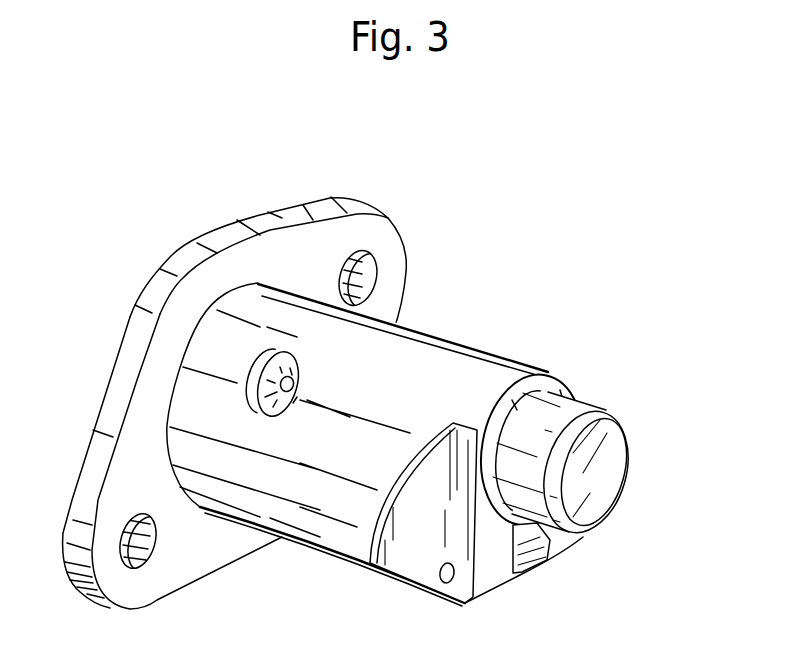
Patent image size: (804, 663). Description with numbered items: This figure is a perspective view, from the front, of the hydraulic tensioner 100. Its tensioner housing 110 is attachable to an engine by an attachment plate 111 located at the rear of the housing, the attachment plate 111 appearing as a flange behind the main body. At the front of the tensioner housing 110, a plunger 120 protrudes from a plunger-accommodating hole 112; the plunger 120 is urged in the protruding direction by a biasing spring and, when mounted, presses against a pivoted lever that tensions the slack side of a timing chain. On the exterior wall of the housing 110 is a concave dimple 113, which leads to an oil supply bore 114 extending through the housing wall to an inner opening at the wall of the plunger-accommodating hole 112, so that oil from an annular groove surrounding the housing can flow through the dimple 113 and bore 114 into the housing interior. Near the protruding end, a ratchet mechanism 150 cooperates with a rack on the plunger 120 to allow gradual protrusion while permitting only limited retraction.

The hydraulic tensioner 100 is at (160, 240).
The tensioner housing 110 is at (757, 307).
The attachment plate 111 is at (390, 246).
The plunger-accommodating hole 112 is at (585, 385).
The concave dimple 113 is at (286, 360).
The oil supply bore 114 is at (294, 388).
The plunger 120 is at (590, 393).
The ratchet mechanism 150 is at (532, 557).